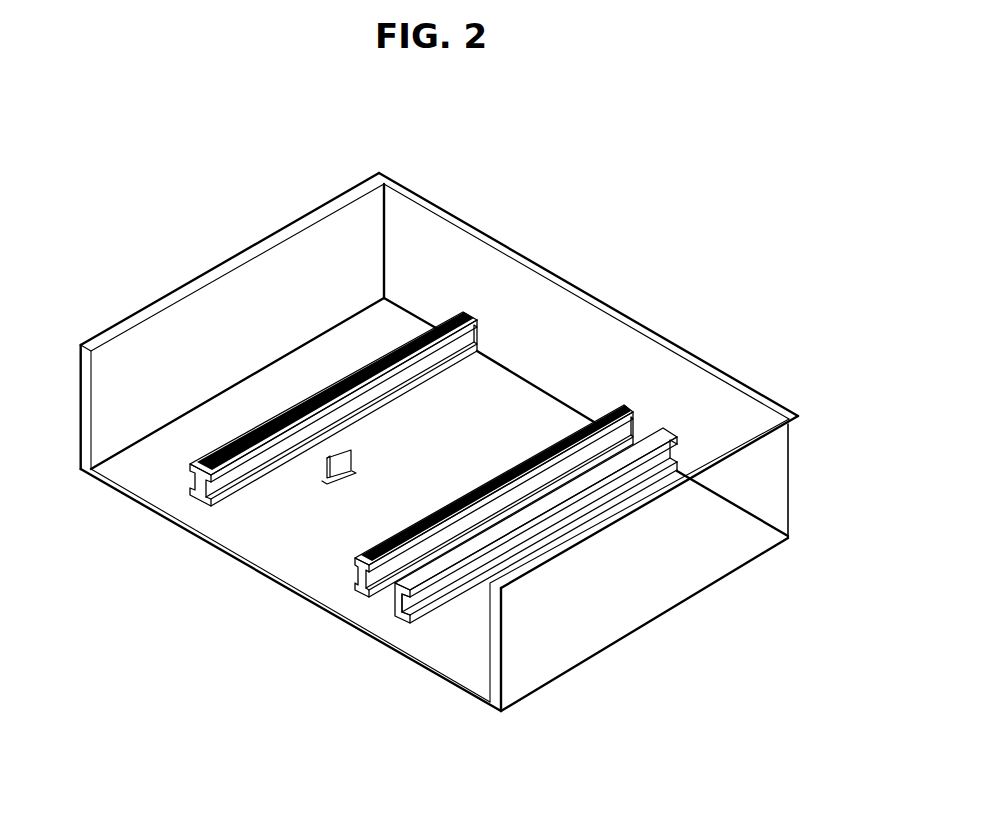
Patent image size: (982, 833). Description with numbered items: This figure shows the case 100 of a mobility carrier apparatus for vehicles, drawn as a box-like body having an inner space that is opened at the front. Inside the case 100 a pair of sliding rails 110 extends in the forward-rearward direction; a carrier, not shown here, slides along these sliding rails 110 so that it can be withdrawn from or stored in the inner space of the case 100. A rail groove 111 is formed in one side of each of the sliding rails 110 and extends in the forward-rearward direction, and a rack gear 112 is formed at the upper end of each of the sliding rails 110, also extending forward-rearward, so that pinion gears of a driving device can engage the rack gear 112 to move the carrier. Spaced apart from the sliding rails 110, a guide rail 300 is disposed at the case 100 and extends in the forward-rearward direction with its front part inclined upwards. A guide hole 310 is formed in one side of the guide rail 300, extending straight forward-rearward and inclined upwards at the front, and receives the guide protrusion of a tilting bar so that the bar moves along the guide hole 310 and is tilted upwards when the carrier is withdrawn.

The case 100 is at (468, 214).
The sliding rails 110 is at (413, 424).
The rail groove 111 is at (440, 360).
The rack gear 112 is at (458, 314).
The guide rail 300 is at (458, 602).
The guide hole 310 is at (426, 588).